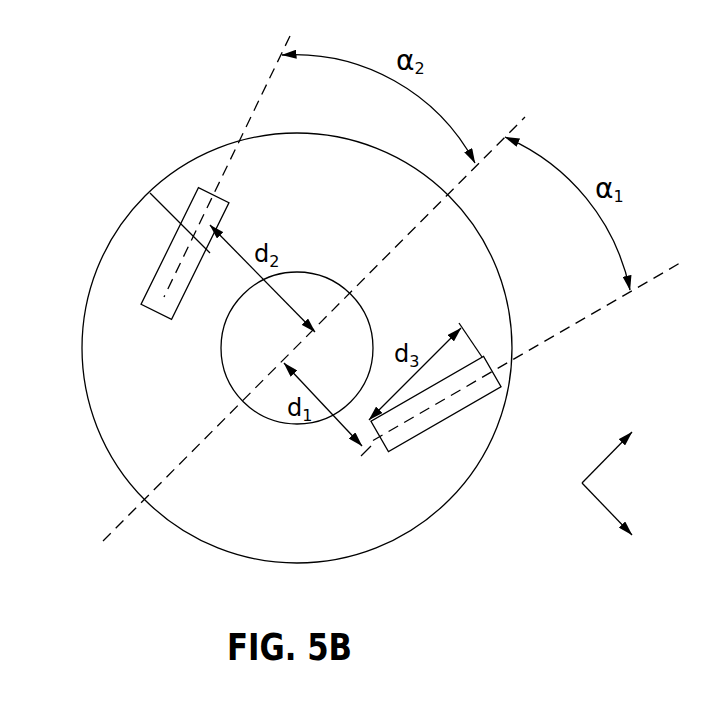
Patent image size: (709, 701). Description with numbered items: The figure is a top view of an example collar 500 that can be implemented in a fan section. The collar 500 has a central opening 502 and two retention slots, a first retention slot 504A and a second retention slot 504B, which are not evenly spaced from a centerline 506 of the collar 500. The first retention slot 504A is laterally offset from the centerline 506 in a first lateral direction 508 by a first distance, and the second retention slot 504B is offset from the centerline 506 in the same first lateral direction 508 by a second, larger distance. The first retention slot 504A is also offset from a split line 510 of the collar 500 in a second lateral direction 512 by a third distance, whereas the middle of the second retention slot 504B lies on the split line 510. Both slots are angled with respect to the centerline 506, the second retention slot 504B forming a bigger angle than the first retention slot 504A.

The collar 500 is at (160, 75).
The opening 502 is at (250, 360).
The first retention slot 504A is at (485, 355).
The second retention slot 504B is at (229, 197).
The centerline 506 is at (531, 108).
The first lateral direction 508 is at (597, 505).
The split line 510 is at (151, 200).
The second lateral direction 512 is at (610, 457).